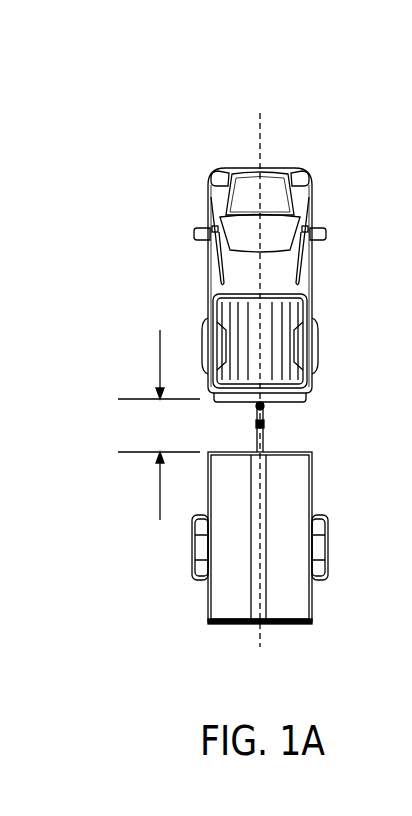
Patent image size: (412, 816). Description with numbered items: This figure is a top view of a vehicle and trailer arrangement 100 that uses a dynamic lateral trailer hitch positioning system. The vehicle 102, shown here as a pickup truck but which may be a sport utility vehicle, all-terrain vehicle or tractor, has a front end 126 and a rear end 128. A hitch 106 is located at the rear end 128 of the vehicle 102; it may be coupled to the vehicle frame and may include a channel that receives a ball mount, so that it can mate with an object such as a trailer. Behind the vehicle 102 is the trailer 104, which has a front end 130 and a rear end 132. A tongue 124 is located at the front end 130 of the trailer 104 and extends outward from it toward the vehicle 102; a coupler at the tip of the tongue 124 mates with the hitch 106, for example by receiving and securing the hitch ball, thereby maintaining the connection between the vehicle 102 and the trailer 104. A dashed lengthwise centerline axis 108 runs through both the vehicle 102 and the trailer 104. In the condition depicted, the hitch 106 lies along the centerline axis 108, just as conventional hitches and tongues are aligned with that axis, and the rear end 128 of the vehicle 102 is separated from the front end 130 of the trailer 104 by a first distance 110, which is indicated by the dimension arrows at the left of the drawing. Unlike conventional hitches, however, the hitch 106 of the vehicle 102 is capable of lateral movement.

The vehicle and trailer system 100 is at (222, 114).
The vehicle 102 is at (273, 250).
The trailer 104 is at (300, 555).
The hitch 106 is at (263, 408).
The centerline axis 108 is at (264, 137).
The first distance 110 is at (160, 352).
The tongue 124 is at (264, 430).
The front end 126 is at (330, 170).
The rear end 128 is at (327, 371).
The front end 130 is at (325, 491).
The rear end 132 is at (324, 626).